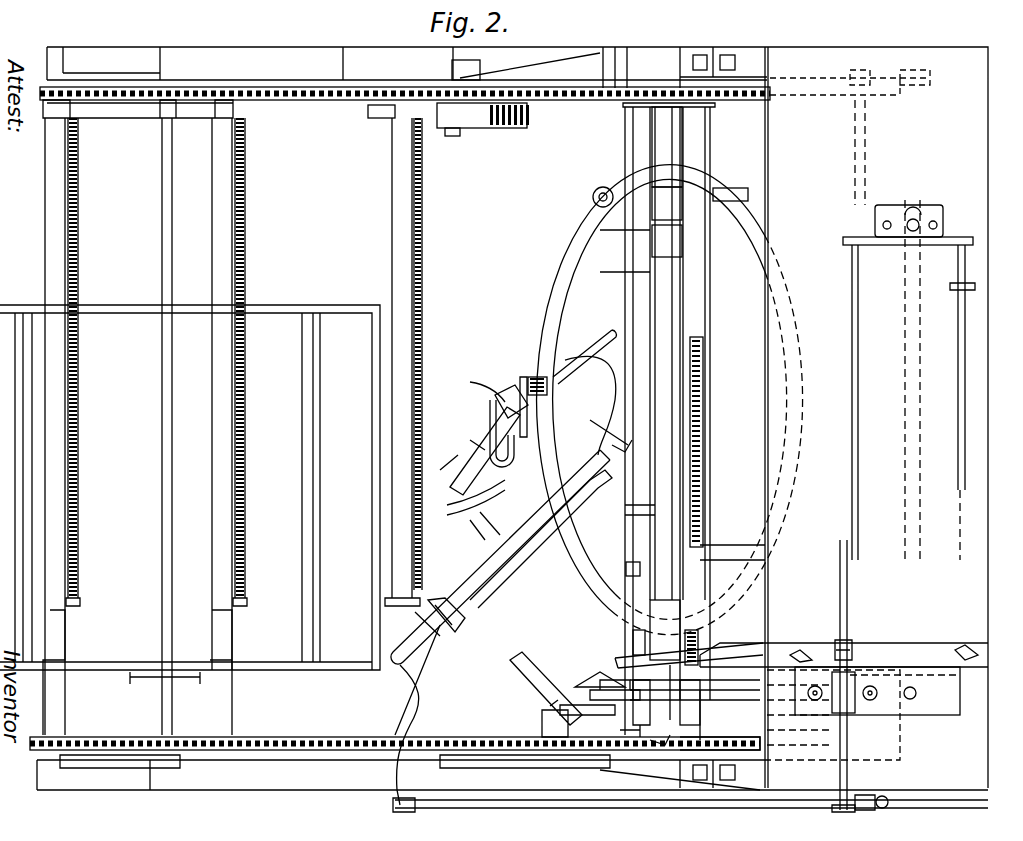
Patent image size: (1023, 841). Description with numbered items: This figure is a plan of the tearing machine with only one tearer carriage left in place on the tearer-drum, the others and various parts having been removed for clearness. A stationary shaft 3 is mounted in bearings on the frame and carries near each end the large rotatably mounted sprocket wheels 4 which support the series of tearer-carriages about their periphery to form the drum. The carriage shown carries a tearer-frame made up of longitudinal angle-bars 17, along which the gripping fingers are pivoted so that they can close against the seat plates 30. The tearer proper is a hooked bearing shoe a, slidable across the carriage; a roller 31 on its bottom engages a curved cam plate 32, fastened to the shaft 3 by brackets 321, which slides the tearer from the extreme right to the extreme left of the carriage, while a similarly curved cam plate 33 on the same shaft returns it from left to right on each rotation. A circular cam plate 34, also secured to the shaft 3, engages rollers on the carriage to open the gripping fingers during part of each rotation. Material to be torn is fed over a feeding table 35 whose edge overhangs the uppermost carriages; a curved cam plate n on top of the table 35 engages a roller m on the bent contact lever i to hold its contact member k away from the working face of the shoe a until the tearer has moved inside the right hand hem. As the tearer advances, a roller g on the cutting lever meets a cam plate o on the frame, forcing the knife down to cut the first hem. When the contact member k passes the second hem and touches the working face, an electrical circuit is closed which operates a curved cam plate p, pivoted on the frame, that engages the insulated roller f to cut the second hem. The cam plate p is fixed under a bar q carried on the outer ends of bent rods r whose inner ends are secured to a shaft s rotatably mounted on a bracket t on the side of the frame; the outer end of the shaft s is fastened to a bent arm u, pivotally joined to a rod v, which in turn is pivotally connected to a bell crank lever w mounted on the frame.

The stationary shaft 3 is at (665, 405).
The sprocket wheels 4 is at (745, 745).
The longitudinal angle-bars 17 is at (632, 511).
The seat plates 30 is at (700, 642).
The roller 31 is at (595, 205).
The curved cam plate 32 is at (568, 512).
The brackets 321 is at (732, 548).
The curved cam plate 33 is at (785, 505).
The circular cam plate 34 is at (600, 685).
The feeding table 35 is at (872, 315).
The hooked bearing shoe a is at (522, 380).
The roller f is at (598, 688).
The roller g is at (455, 495).
The contact lever i is at (502, 467).
The contact member k is at (640, 638).
The roller m is at (482, 420).
The curved cam plate n is at (752, 645).
The cam plate o is at (545, 682).
The curved cam plate p is at (507, 395).
The bar q is at (598, 345).
The bent rods r is at (606, 392).
The shaft s is at (545, 520).
The bracket t is at (500, 574).
The bent arm u is at (418, 712).
The rod v is at (660, 808).
The bell crank lever w is at (890, 803).